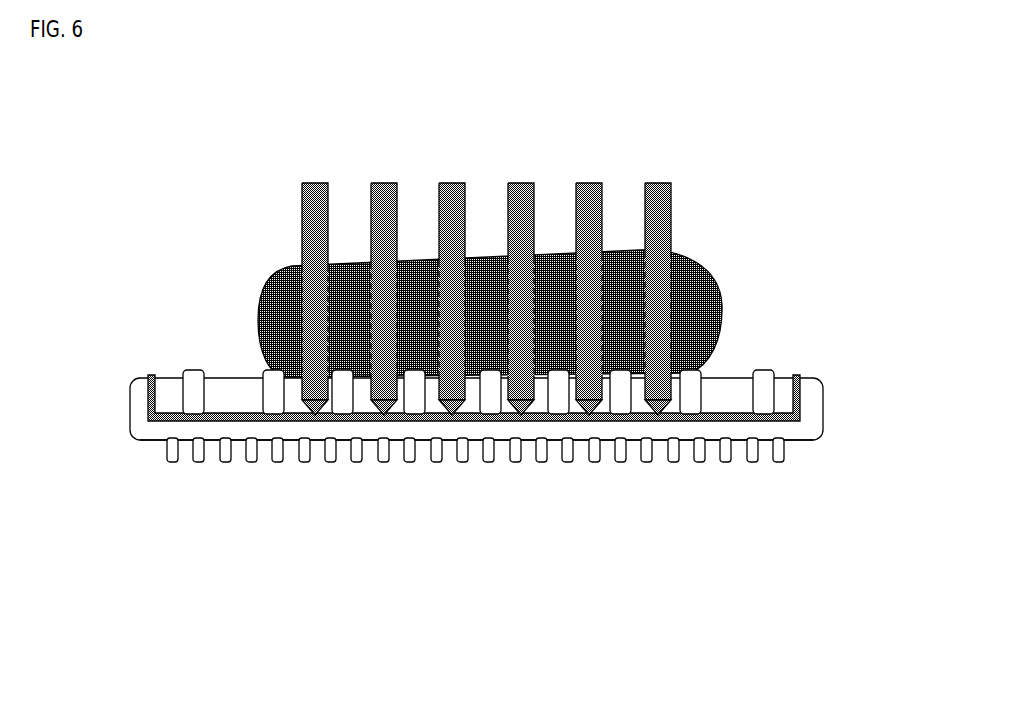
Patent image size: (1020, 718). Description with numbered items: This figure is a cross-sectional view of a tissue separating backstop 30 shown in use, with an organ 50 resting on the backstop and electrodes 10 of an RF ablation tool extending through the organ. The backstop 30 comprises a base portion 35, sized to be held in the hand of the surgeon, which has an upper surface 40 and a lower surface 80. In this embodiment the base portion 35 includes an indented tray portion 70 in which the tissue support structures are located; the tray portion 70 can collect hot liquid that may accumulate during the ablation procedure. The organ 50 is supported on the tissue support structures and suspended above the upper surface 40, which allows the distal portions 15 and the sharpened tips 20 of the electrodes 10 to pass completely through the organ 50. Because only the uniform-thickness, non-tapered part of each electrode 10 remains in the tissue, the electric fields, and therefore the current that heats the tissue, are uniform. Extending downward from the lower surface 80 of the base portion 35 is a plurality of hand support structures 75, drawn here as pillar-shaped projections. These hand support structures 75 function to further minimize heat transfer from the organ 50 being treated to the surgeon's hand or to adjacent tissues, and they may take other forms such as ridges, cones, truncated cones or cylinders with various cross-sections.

The electrodes 10 is at (660, 200).
The distal portions 15 is at (365, 396).
The sharpened tips 20 is at (393, 413).
The tissue separating backstop 30 is at (499, 322).
The base portion 35 is at (805, 407).
The upper surface 40 is at (232, 413).
The organ 50 is at (700, 292).
The tray portion 70 is at (725, 388).
The hand support structures 75 is at (702, 465).
The lower surface 80 is at (607, 447).